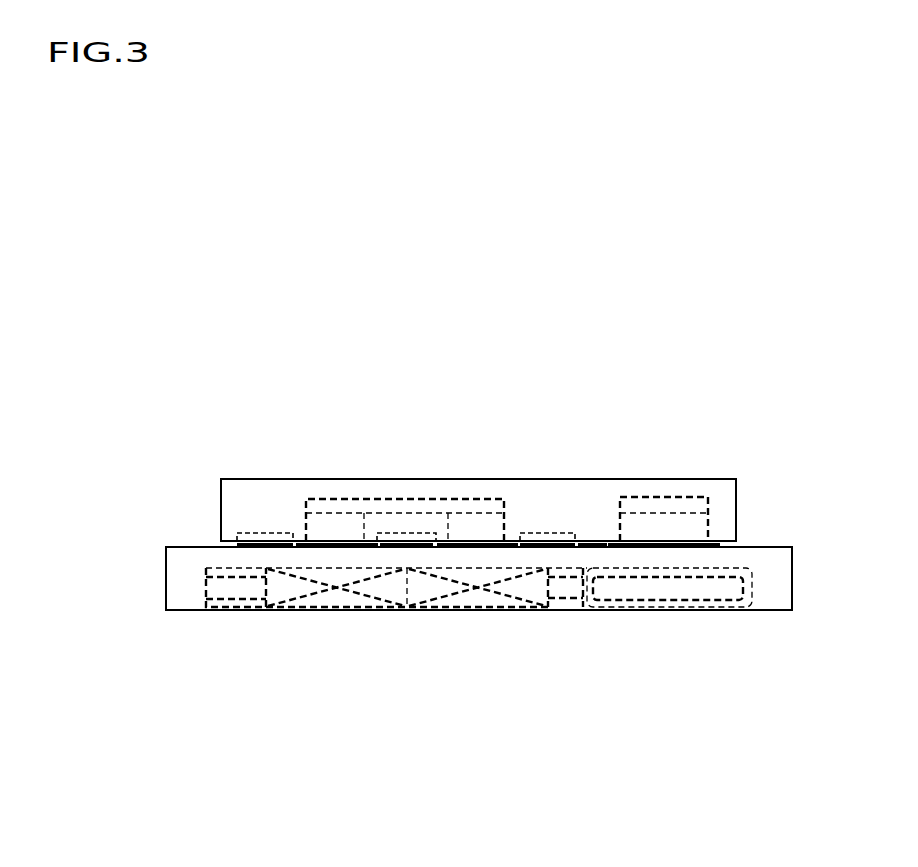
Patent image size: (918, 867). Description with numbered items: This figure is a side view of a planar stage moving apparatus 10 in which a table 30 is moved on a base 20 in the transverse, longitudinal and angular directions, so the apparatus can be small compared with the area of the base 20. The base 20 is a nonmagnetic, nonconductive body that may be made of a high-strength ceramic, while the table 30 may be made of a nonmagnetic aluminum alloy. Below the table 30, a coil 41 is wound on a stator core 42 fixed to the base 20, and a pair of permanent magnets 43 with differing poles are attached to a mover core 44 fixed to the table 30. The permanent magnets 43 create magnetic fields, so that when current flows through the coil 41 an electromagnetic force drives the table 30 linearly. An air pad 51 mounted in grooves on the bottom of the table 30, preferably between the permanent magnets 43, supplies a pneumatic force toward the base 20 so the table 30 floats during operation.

The planar stage moving apparatus 10 is at (126, 485).
The base 20 is at (183, 583).
The table 30 is at (265, 502).
The coil 41 is at (345, 602).
The stator core 42 is at (236, 592).
The permanent magnets 43 is at (346, 525).
The mover core 44 is at (406, 506).
The air pad 51 is at (565, 541).